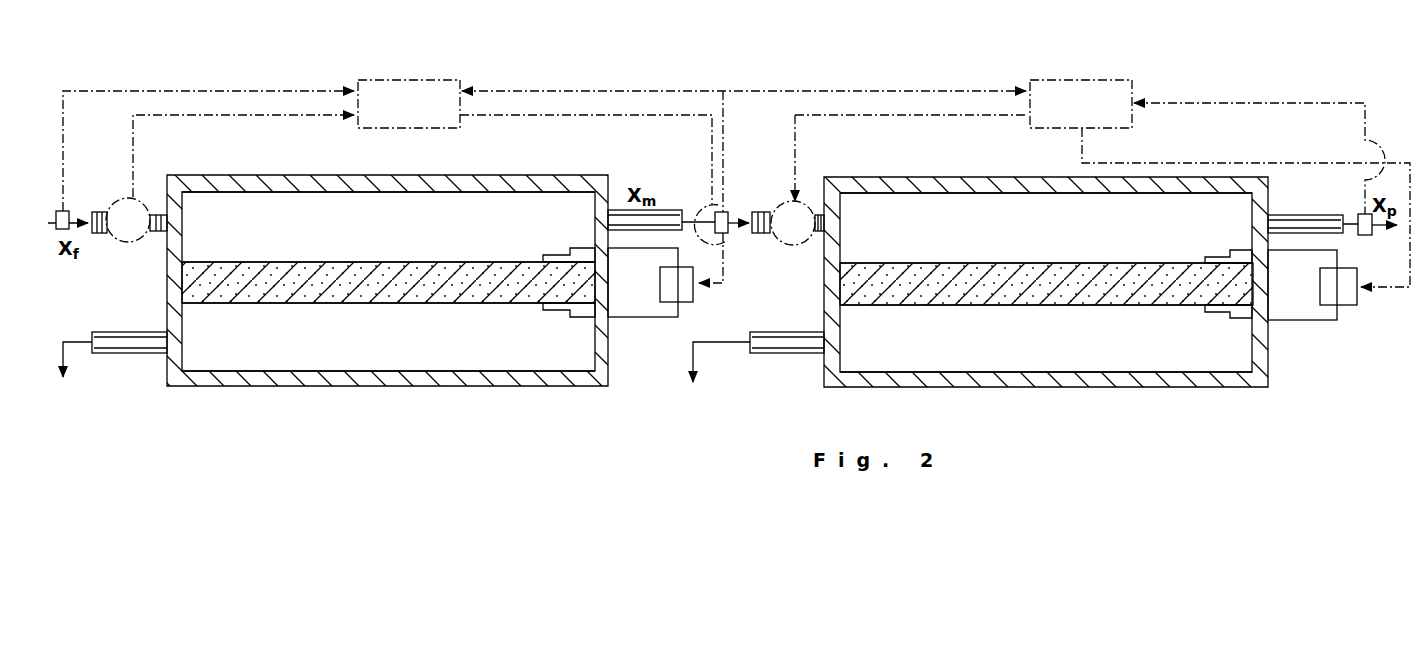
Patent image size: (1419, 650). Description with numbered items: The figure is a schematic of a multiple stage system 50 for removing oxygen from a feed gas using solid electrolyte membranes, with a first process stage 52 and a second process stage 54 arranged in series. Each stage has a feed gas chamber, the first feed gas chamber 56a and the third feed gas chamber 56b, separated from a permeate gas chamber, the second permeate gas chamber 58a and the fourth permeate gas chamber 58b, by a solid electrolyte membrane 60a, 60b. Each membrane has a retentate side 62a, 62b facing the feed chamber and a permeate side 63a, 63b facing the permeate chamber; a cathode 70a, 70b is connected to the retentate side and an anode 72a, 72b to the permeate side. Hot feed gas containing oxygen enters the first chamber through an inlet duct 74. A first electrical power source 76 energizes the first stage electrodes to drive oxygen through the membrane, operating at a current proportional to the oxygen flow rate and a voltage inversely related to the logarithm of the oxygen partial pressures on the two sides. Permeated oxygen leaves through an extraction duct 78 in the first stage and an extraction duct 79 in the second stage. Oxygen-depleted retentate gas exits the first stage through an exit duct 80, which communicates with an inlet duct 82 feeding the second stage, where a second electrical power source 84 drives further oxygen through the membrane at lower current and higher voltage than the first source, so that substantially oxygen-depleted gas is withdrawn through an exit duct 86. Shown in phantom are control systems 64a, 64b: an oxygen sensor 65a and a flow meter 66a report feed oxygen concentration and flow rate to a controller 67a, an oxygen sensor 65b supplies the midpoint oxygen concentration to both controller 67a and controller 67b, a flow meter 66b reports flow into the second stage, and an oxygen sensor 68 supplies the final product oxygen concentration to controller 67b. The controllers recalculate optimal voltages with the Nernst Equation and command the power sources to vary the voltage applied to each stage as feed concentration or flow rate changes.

The multiple stage system 50 is at (731, 78).
The first process stage 52 is at (185, 170).
The second process stage 54 is at (934, 166).
The first feed gas chamber 56a is at (297, 210).
The third feed gas chamber 56b is at (1037, 222).
The second permeate gas chamber 58a is at (270, 358).
The fourth permeate gas chamber 58b is at (1117, 360).
The solid electrolyte membrane 60a is at (471, 252).
The solid electrolyte membrane 60b is at (979, 253).
The retentate side 62a is at (375, 262).
The retentate side 62b is at (917, 263).
The permeate side 63a is at (393, 305).
The permeate side 63b is at (1012, 306).
The control system 64a is at (204, 84).
The control system 64b is at (1268, 90).
The oxygen sensor 65a is at (68, 206).
The oxygen sensor 65b is at (726, 205).
The flow meter 66a is at (143, 245).
The flow meter 66b is at (797, 214).
The controller 67a is at (440, 78).
The controller 67b is at (1108, 78).
The oxygen sensor 68 is at (1368, 237).
The cathode 70a is at (558, 254).
The cathode 70b is at (1213, 257).
The anode 72a is at (560, 312).
The anode 72b is at (1210, 313).
The inlet duct 74 is at (160, 233).
The first electrical power source 76 is at (683, 302).
The extraction duct 78 is at (120, 342).
The extraction duct 79 is at (723, 343).
The exit duct 80 is at (625, 218).
The inlet duct 82 is at (820, 235).
The second electrical power source 84 is at (1340, 290).
The exit duct 86 is at (1310, 214).